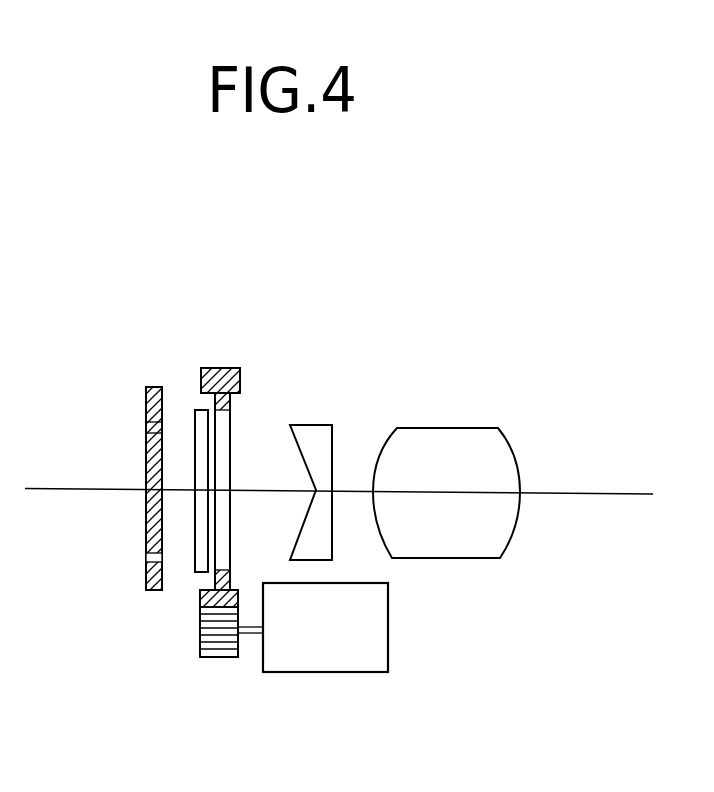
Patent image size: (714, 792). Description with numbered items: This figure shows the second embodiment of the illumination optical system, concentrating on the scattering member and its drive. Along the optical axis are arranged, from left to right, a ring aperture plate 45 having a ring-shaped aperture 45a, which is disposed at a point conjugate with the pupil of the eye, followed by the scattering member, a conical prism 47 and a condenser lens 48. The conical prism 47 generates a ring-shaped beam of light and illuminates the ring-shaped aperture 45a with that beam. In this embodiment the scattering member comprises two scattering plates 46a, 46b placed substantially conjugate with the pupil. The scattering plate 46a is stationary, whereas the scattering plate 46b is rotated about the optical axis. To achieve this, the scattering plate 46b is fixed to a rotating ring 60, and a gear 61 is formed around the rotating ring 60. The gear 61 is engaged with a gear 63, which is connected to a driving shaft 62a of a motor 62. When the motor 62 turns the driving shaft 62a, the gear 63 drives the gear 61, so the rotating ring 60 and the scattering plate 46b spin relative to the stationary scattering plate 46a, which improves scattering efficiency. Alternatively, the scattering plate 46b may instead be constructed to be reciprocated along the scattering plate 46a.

The ring aperture plate 45 is at (146, 523).
The ring-shaped aperture 45a is at (145, 551).
The scattering plate 46a is at (197, 570).
The scattering plate 46b is at (230, 440).
The conical prism 47 is at (323, 428).
The condenser lens 48 is at (513, 463).
The rotating ring 60 is at (243, 448).
The gear 61 is at (226, 371).
The motor 62 is at (388, 650).
The driving shaft 62a is at (250, 640).
The gear 63 is at (215, 658).